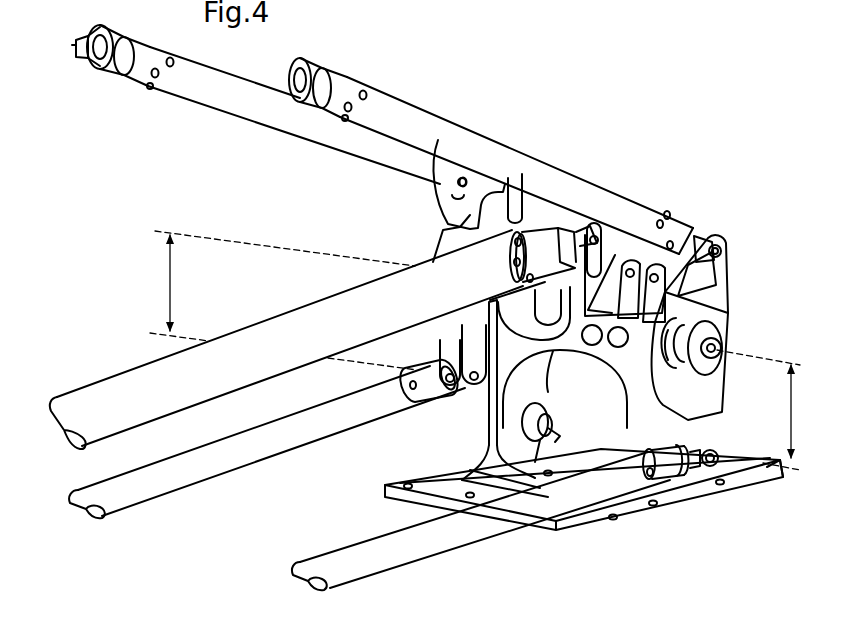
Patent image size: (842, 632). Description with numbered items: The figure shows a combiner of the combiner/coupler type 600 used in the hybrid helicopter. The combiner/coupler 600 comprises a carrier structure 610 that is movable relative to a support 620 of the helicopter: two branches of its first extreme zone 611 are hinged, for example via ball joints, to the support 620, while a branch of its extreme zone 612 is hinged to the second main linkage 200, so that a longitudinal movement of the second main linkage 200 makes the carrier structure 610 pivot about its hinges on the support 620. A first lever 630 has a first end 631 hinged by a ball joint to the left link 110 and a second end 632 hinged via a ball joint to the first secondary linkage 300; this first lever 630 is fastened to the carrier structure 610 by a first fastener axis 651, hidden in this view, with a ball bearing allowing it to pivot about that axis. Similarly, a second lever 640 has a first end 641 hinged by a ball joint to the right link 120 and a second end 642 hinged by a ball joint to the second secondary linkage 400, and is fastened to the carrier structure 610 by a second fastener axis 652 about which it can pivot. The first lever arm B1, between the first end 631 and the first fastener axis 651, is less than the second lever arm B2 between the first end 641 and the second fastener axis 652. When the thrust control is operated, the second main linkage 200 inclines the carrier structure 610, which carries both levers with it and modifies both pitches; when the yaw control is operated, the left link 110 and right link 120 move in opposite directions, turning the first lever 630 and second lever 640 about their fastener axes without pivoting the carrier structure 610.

The first secondary linkage 300 is at (196, 92).
The second secondary linkage 400 is at (485, 150).
The second main linkage 200 is at (103, 388).
The left link 110 is at (167, 483).
The right link 120 is at (340, 555).
The combiner/coupler 600 is at (557, 130).
The carrier structure 610 is at (572, 357).
The first extreme zone 611 is at (452, 425).
The extreme zone 612 is at (617, 253).
The support 620 is at (755, 480).
The first lever 630 is at (435, 234).
The first end of the first lever 631 is at (422, 363).
The second end of the first lever 632 is at (468, 213).
The second lever 640 is at (733, 276).
The first end of the second lever 641 is at (733, 443).
The second end of the second lever 642 is at (727, 224).
The first fastener axis 651 is at (423, 255).
The second fastener axis 652 is at (717, 350).
The first lever arm B1 is at (275, 300).
The second lever arm B2 is at (758, 410).